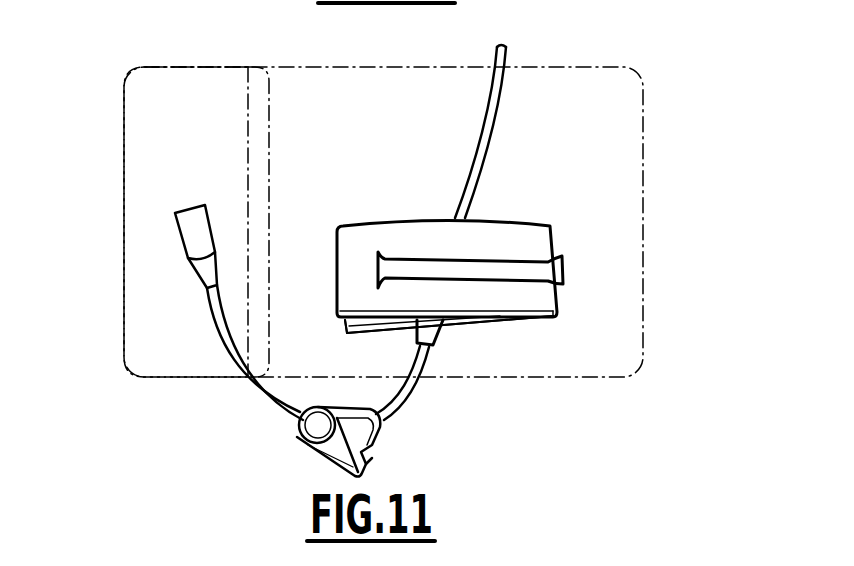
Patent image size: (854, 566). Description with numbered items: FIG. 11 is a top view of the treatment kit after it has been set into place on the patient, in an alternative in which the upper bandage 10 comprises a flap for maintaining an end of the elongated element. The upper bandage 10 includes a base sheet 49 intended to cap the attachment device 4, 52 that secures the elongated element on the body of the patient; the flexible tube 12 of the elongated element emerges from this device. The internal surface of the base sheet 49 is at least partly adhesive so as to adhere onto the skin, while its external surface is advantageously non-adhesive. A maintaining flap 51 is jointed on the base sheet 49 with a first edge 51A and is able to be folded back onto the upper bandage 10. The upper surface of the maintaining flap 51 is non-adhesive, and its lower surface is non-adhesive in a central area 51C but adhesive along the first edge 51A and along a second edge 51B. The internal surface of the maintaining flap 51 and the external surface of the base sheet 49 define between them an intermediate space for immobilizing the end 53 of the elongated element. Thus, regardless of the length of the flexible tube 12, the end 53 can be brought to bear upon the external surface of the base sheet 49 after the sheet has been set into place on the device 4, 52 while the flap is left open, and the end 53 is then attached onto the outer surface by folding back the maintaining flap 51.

The upper bandage 10 is at (610, 235).
The flexible tube 12 is at (505, 127).
The base sheet 49 is at (618, 330).
The first device 4 is at (502, 322).
The second attachment device 52 is at (449, 324).
The flap 51 is at (137, 383).
The first edge 51A is at (124, 262).
The second edge 51B is at (257, 153).
The central area 51C is at (182, 76).
The end 53 is at (228, 344).